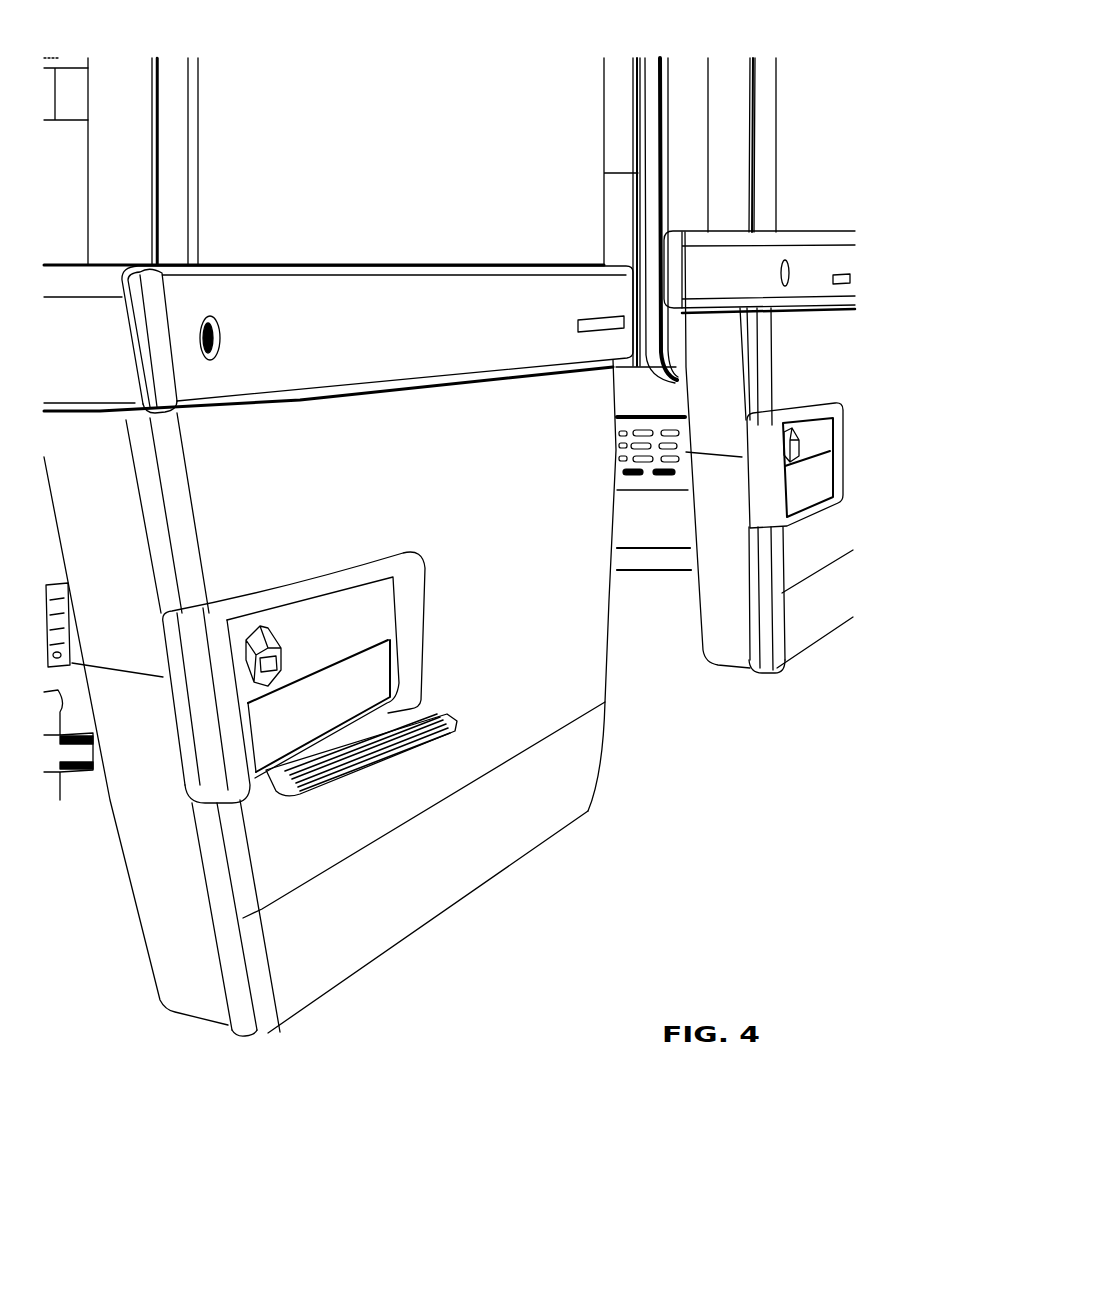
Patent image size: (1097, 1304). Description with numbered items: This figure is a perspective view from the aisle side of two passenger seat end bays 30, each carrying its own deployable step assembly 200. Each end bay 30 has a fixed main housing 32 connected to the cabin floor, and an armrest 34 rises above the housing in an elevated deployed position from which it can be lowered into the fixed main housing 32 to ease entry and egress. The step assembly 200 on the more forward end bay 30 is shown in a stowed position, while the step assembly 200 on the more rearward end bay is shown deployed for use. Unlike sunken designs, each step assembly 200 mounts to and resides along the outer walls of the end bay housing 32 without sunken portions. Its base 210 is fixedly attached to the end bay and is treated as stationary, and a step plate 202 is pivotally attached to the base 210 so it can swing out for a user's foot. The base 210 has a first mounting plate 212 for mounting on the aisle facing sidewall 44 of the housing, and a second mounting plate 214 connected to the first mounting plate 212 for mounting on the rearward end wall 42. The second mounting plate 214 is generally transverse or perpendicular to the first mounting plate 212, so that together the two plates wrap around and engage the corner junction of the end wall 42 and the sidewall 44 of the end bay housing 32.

The end bay 30 is at (394, 1040).
The fixed main housing 32 is at (584, 815).
The armrest 34 is at (511, 85).
The rearward end wall 42 is at (180, 938).
The aisle facing sidewall 44 is at (551, 640).
The step assembly 200 is at (506, 636).
The step plate 202 is at (456, 722).
The base 210 is at (222, 780).
The first mounting plate 212 is at (418, 610).
The second mounting plate 214 is at (195, 745).